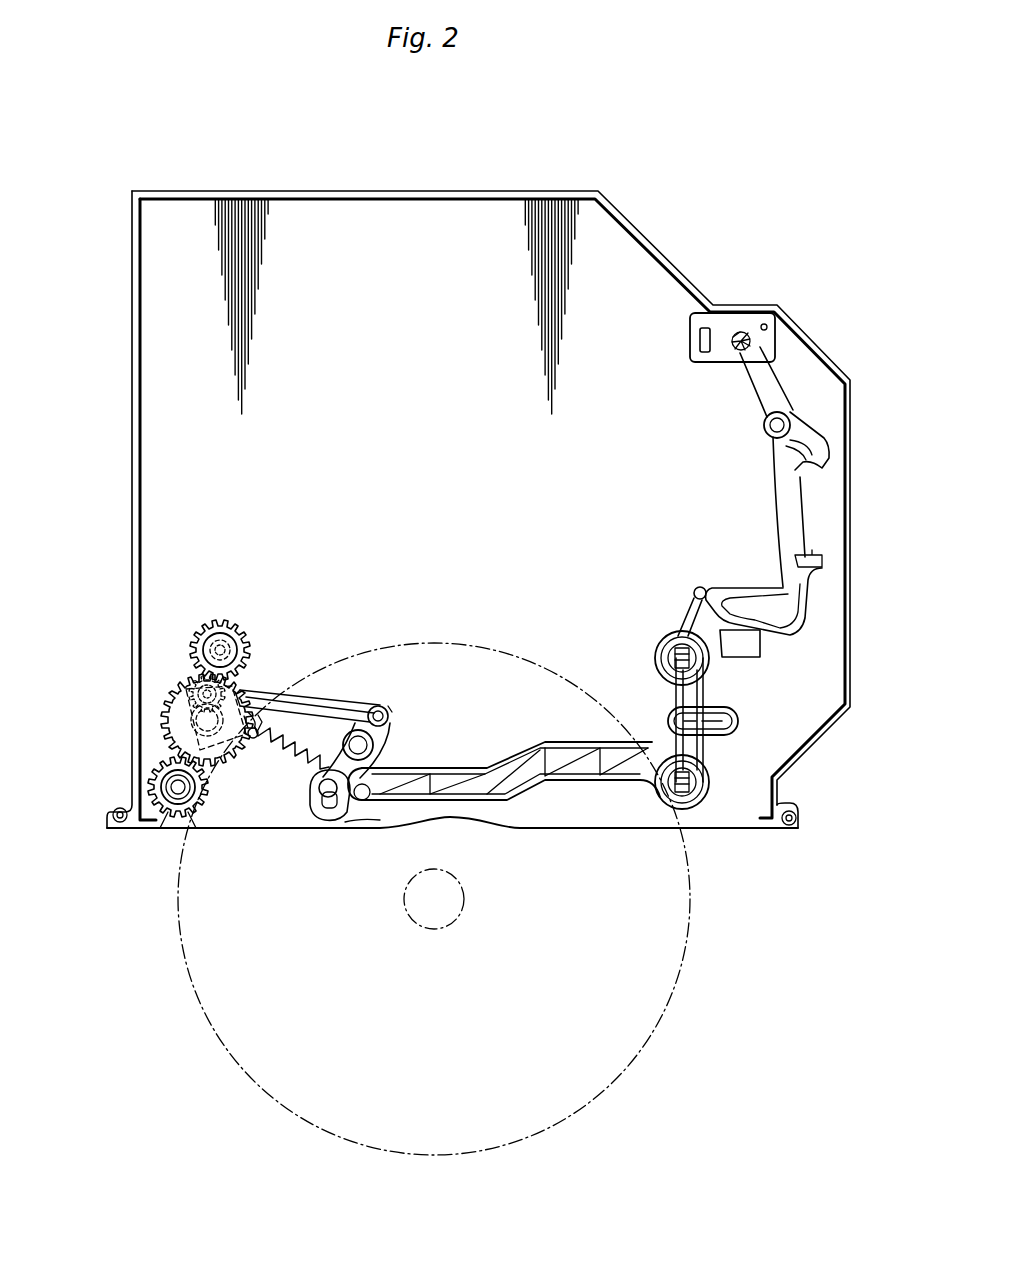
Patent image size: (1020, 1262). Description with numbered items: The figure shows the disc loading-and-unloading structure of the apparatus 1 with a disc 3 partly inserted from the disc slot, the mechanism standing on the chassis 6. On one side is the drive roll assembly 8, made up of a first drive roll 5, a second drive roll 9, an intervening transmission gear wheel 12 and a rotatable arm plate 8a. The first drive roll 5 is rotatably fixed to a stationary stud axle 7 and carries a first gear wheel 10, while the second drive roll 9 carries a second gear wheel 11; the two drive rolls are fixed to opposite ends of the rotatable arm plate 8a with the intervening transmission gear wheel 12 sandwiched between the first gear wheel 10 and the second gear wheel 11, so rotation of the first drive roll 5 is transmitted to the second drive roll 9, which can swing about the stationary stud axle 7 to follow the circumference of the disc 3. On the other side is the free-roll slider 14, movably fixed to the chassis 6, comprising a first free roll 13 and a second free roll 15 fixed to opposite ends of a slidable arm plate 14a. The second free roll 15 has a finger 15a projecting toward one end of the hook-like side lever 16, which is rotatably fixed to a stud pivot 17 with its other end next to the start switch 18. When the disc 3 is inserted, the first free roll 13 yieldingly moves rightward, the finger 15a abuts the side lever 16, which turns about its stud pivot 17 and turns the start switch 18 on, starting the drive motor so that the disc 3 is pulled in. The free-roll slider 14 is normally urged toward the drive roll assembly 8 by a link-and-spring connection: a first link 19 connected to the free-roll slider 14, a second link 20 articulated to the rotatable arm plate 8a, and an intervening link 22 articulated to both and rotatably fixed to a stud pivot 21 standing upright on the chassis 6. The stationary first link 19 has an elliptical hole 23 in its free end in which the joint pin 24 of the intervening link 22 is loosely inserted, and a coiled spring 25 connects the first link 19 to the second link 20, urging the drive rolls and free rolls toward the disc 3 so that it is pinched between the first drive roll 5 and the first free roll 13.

The apparatus 1 is at (686, 193).
The disc 3 is at (690, 957).
The first drive roll 5 is at (162, 785).
The chassis 6 is at (132, 516).
The stationary stud axle 7 is at (160, 772).
The drive roll assembly 8 is at (190, 668).
The rotatable arm plate 8a is at (165, 710).
The second drive roll 9 is at (208, 632).
The first gear wheel 10 is at (180, 816).
The second gear wheel 11 is at (234, 633).
The intervening transmission gear wheel 12 is at (185, 690).
The first free roll 13 is at (690, 808).
The free-roll slider 14 is at (710, 744).
The slidable arm plate 14a is at (706, 715).
The second free roll 15 is at (660, 650).
The finger 15a is at (697, 590).
The side lever 16 is at (772, 515).
The stud pivot 17 is at (764, 424).
The start switch 18 is at (748, 325).
The first link 19 is at (520, 742).
The second link 20 is at (318, 692).
The stud pivot 21 is at (378, 742).
The intervening link 22 is at (328, 745).
The elliptical hole 23 is at (329, 810).
The joint pin 24 is at (322, 792).
The coiled spring 25 is at (262, 745).